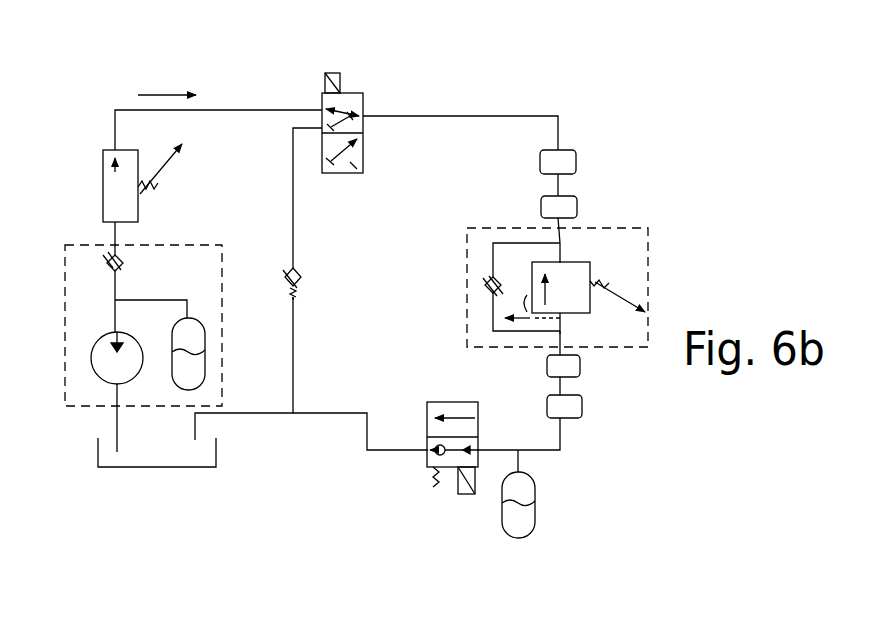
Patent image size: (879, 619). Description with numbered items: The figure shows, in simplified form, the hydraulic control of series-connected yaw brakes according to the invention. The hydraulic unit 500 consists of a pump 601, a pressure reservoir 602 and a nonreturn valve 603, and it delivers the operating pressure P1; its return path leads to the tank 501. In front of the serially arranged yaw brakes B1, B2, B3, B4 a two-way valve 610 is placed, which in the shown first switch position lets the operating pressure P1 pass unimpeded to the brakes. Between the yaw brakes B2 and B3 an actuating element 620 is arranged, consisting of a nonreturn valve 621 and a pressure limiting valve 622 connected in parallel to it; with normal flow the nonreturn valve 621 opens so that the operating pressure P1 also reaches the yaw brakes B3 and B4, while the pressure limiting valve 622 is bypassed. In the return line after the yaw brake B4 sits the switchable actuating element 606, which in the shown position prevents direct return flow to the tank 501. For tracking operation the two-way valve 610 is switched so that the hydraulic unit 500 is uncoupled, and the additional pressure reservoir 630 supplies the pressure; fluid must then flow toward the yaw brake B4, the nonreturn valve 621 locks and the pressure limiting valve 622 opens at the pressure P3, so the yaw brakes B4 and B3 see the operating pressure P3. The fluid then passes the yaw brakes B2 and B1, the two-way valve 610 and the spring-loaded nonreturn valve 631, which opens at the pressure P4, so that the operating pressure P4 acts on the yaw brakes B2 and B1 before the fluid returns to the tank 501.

The hydraulic unit 500 is at (76, 240).
The tank 501 is at (210, 467).
The pump 601 is at (100, 367).
The pressure reservoir 602 is at (197, 357).
The nonreturn valve 603 is at (138, 267).
The switchable actuating element 606 is at (452, 468).
The two-way valve 610 is at (355, 93).
The actuating element 620 is at (579, 261).
The nonreturn valve 621 is at (485, 278).
The pressure limiting valve 622 is at (577, 262).
The additional pressure reservoir 630 is at (525, 482).
The spring-loaded nonreturn valve 631 is at (301, 264).
The yaw brake B1 is at (570, 150).
The yaw brake B2 is at (575, 205).
The yaw brake B3 is at (572, 368).
The yaw brake B4 is at (580, 418).
The operating pressure P1 is at (167, 74).
The opening pressure of pressure limiting valve P3 is at (594, 331).
The opening pressure of spring-loaded nonreturn valve P4 is at (320, 289).